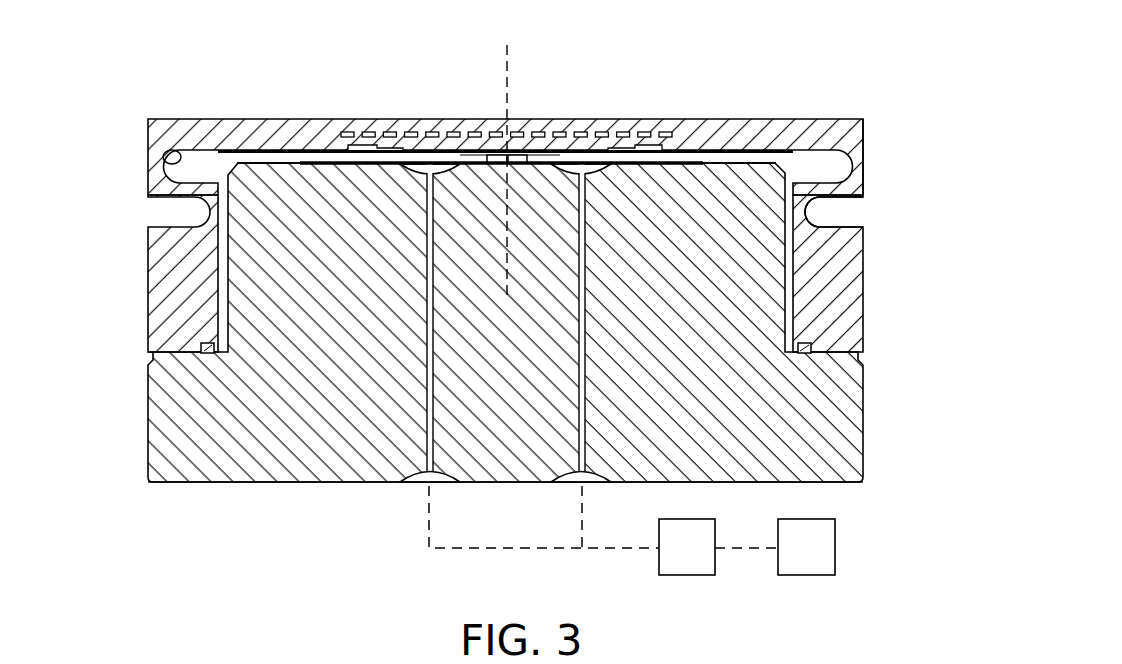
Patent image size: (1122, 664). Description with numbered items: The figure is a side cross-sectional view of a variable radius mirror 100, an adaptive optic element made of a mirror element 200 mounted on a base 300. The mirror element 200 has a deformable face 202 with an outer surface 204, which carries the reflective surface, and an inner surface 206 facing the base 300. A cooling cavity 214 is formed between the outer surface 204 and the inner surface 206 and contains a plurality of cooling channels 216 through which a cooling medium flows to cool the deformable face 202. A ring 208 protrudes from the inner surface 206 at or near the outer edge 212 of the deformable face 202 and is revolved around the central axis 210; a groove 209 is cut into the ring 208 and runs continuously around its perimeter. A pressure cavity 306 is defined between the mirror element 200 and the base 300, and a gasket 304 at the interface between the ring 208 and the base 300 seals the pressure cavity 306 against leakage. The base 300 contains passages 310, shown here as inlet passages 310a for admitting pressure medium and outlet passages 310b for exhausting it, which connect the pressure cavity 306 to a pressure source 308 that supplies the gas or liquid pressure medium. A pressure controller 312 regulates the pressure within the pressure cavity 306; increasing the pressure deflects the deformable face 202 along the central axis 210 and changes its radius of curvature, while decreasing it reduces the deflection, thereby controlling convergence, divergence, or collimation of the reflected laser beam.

The variable radius mirror 100 is at (112, 64).
The mirror element 200 is at (858, 66).
The deformable face 202 is at (248, 112).
The outer surface 204 is at (425, 118).
The inner surface 206 is at (196, 151).
The ring 208 is at (846, 288).
The groove 209 is at (855, 213).
The central axis 210 is at (507, 47).
The outer edge 212 is at (862, 118).
The cooling cavity 214 is at (670, 130).
The cooling channels 216 is at (622, 130).
The base 300 is at (896, 428).
The gasket 304 is at (201, 347).
The pressure cavity 306 is at (198, 170).
The pressure source 308 is at (668, 568).
The passages 310 is at (427, 288).
The inlet passages 310a is at (424, 432).
The outlet passages 310b is at (590, 432).
The pressure controller 312 is at (830, 553).